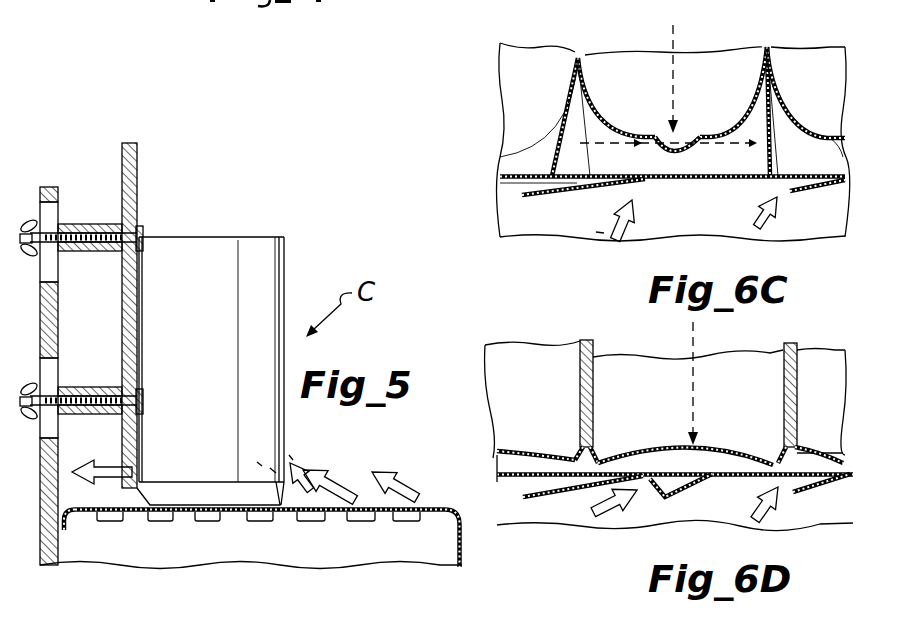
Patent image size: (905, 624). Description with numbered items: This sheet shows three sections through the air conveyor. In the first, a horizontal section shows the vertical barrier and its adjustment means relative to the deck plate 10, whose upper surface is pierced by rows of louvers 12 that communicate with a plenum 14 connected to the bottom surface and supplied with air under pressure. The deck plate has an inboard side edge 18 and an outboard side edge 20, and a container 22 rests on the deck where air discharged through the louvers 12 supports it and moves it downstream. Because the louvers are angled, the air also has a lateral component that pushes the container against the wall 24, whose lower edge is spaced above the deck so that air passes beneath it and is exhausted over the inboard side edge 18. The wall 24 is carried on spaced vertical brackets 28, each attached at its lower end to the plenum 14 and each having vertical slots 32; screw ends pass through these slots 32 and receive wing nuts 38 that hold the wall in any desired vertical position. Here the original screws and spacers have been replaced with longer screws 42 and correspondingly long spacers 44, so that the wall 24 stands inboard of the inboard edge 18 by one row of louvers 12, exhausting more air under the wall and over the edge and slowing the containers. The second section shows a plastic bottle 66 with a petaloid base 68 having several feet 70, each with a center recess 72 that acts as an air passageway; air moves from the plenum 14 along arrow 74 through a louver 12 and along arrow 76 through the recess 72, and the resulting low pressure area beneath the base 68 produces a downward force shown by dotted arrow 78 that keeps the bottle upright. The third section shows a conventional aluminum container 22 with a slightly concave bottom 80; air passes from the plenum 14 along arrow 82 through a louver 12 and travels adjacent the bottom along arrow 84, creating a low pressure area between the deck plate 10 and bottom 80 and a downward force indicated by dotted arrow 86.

In FIG. 5, the deck plate 10 is at (330, 523).
In FIG. 6C, the deck plate 10 is at (503, 197).
In FIG. 6D, the deck plate 10 is at (497, 465).
In FIG. 5, the louvers 12 is at (200, 523).
In FIG. 6C, the louvers 12 is at (696, 190).
In FIG. 6D, the louvers 12 is at (706, 491).
In FIG. 5, the plenum 14 is at (462, 543).
In FIG. 6C, the plenum 14 is at (652, 238).
In FIG. 6D, the plenum 14 is at (587, 519).
In FIG. 5, the inboard side edge 18 is at (67, 521).
In FIG. 5, the outboard side edge 20 is at (462, 479).
In FIG. 5, the container 22 is at (215, 243).
In FIG. 6D, the container 22 is at (537, 354).
In FIG. 5, the wall 24 is at (134, 167).
In FIG. 5, the vertical brackets 28 is at (55, 187).
In FIG. 5, the vertical slots 32 is at (53, 272).
In FIG. 5, the wing nuts 38 is at (30, 227).
In FIG. 5, the longer screws 42 is at (137, 252).
In FIG. 5, the long spacers 44 is at (88, 224).
In FIG. 6C, the plastic bottle 66 is at (608, 66).
In FIG. 6C, the petaloid base 68 is at (736, 116).
In FIG. 6C, the feet 70 is at (615, 179).
In FIG. 6C, the recess 72 is at (662, 140).
In FIG. 6C, the arrow 74 is at (600, 236).
In FIG. 6C, the arrow 76 is at (707, 184).
In FIG. 6C, the dotted arrow 78 is at (681, 33).
In FIG. 6D, the bottom 80 is at (761, 411).
In FIG. 6D, the arrow 82 is at (597, 503).
In FIG. 6D, the arrow 84 is at (775, 470).
In FIG. 6D, the dotted arrow 86 is at (681, 333).